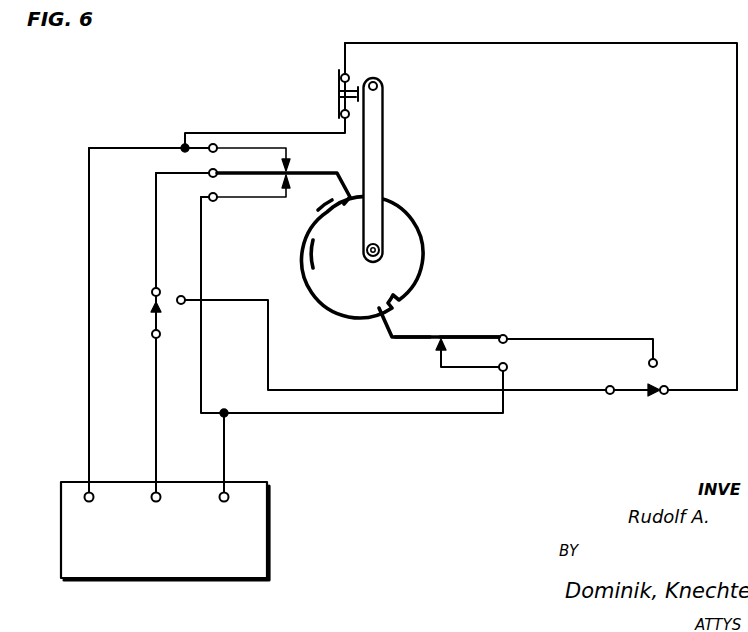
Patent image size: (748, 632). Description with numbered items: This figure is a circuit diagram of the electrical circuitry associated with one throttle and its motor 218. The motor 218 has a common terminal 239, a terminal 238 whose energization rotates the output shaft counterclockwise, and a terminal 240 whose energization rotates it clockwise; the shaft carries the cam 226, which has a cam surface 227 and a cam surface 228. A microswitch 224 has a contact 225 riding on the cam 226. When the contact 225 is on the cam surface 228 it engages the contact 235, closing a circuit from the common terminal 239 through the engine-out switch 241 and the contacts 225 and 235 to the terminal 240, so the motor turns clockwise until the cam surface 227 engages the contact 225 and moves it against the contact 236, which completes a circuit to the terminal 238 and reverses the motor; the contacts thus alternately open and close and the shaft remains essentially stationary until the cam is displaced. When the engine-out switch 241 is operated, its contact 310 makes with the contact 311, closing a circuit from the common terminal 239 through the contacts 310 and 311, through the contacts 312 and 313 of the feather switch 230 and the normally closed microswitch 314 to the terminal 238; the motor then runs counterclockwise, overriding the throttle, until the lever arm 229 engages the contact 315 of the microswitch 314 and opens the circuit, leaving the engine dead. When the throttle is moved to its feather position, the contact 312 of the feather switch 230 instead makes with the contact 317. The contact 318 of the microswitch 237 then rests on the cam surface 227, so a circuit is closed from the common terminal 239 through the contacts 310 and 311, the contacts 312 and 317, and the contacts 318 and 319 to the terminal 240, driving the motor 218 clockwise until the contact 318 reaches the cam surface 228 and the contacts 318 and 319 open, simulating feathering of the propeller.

The motor 218 is at (258, 530).
The microswitch 224 is at (303, 190).
The contact 225 is at (304, 173).
The cam 226 is at (360, 290).
The cam surface 227 is at (312, 260).
The cam surface 228 is at (425, 232).
The lever arm 229 is at (376, 145).
The feather switch 230 is at (638, 402).
The contact 235 is at (280, 188).
The contact 236 is at (280, 157).
The microswitch 237 is at (451, 332).
The terminal 238 is at (90, 491).
The common terminal 239 is at (157, 491).
The terminal 240 is at (228, 491).
The engine-out switch 241 is at (150, 291).
The contact 310 is at (152, 318).
The contact 311 is at (184, 297).
The contact 312 is at (635, 388).
The contact 313 is at (665, 396).
The microswitch 314 is at (338, 92).
The contact 315 is at (353, 79).
The contact 317 is at (656, 360).
The contact 318 is at (413, 341).
The contact 319 is at (450, 353).